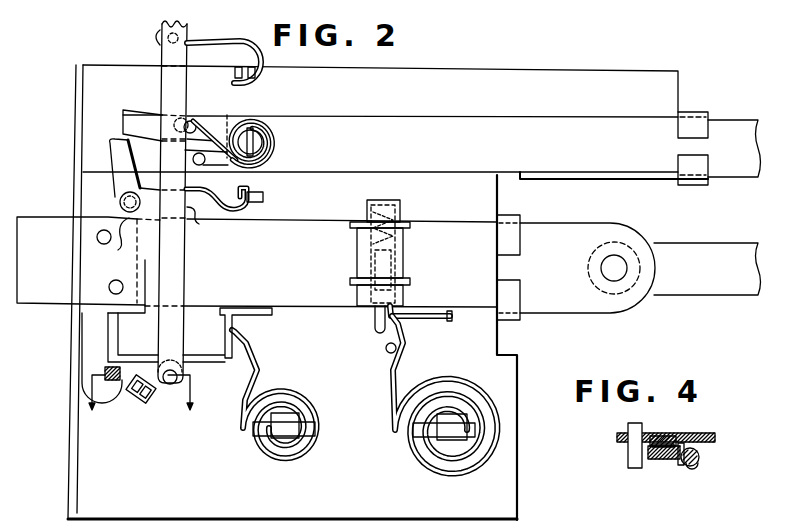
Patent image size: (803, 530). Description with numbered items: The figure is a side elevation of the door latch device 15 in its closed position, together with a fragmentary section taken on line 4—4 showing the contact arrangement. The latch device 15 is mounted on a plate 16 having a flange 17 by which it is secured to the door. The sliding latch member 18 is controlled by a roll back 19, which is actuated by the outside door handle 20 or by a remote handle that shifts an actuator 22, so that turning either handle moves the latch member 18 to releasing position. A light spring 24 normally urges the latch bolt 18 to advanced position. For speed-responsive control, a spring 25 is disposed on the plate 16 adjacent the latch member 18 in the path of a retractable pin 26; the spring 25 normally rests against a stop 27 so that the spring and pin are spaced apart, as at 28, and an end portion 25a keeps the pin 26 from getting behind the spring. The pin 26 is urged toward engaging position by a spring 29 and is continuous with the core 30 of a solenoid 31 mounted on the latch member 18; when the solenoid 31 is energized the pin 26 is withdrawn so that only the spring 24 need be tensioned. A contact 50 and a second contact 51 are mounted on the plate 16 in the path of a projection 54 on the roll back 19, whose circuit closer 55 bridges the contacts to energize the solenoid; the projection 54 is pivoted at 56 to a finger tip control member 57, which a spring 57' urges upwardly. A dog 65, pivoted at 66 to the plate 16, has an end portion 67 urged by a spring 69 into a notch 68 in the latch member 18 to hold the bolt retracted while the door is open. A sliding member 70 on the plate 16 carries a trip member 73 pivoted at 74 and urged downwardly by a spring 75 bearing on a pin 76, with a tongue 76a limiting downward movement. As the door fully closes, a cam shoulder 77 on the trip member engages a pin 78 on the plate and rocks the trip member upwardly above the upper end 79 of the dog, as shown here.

In FIG. 2, the section line 4— 4 is at (140, 405).
In FIG. 2, the latch device 15 is at (641, 68).
In FIG. 2, the plate 16 is at (578, 60).
In FIG. 4, the plate 16 is at (703, 434).
In FIG. 2, the flange 17 is at (80, 80).
In FIG. 2, the sliding latch member 18 is at (324, 224).
In FIG. 2, the roll back 19 is at (93, 341).
In FIG. 4, the roll back 19 is at (622, 450).
In FIG. 2, the outside door handle 20 is at (122, 395).
In FIG. 4, the outside door handle 20 is at (633, 468).
In FIG. 2, the actuator 22 is at (705, 288).
In FIG. 2, the spring 24 is at (246, 336).
In FIG. 2, the spring 25 is at (392, 388).
In FIG. 2, the end portion 25a is at (450, 314).
In FIG. 2, the retractable pin 26 is at (380, 333).
In FIG. 2, the stop 27 is at (387, 353).
In FIG. 2, the space 28 is at (403, 334).
In FIG. 2, the spring 29 is at (410, 241).
In FIG. 2, the core 30 is at (408, 270).
In FIG. 2, the solenoid 31 is at (358, 268).
In FIG. 2, the contact 50 is at (135, 402).
In FIG. 4, the contact 50 is at (664, 432).
In FIG. 2, the second contact 51 is at (150, 394).
In FIG. 4, the second contact 51 is at (675, 436).
In FIG. 2, the projection 54 is at (138, 363).
In FIG. 4, the projection 54 is at (666, 460).
In FIG. 2, the circuit closer 55 is at (165, 352).
In FIG. 4, the circuit closer 55 is at (679, 466).
In FIG. 2, the pivot 56 is at (178, 375).
In FIG. 4, the pivot 56 is at (701, 456).
In FIG. 2, the finger tip control member 57 is at (227, 335).
In FIG. 4, the finger tip control member 57 is at (710, 474).
In FIG. 2, the spring 57' is at (208, 46).
In FIG. 2, the dog 65 is at (116, 164).
In FIG. 2, the pivot 66 is at (121, 204).
In FIG. 2, the end portion 67 is at (198, 224).
In FIG. 2, the notch 68 is at (113, 256).
In FIG. 2, the spring 69 is at (242, 213).
In FIG. 2, the sliding member 70 is at (497, 124).
In FIG. 2, the trip member 73 is at (214, 120).
In FIG. 2, the pivot 74 is at (263, 141).
In FIG. 2, the spring 75 is at (275, 153).
In FIG. 2, the pin 76 is at (194, 121).
In FIG. 2, the tongue 76a is at (239, 187).
In FIG. 2, the cam shoulder 77 is at (239, 118).
In FIG. 2, the pin 78 is at (197, 171).
In FIG. 2, the upper end 79 is at (121, 140).